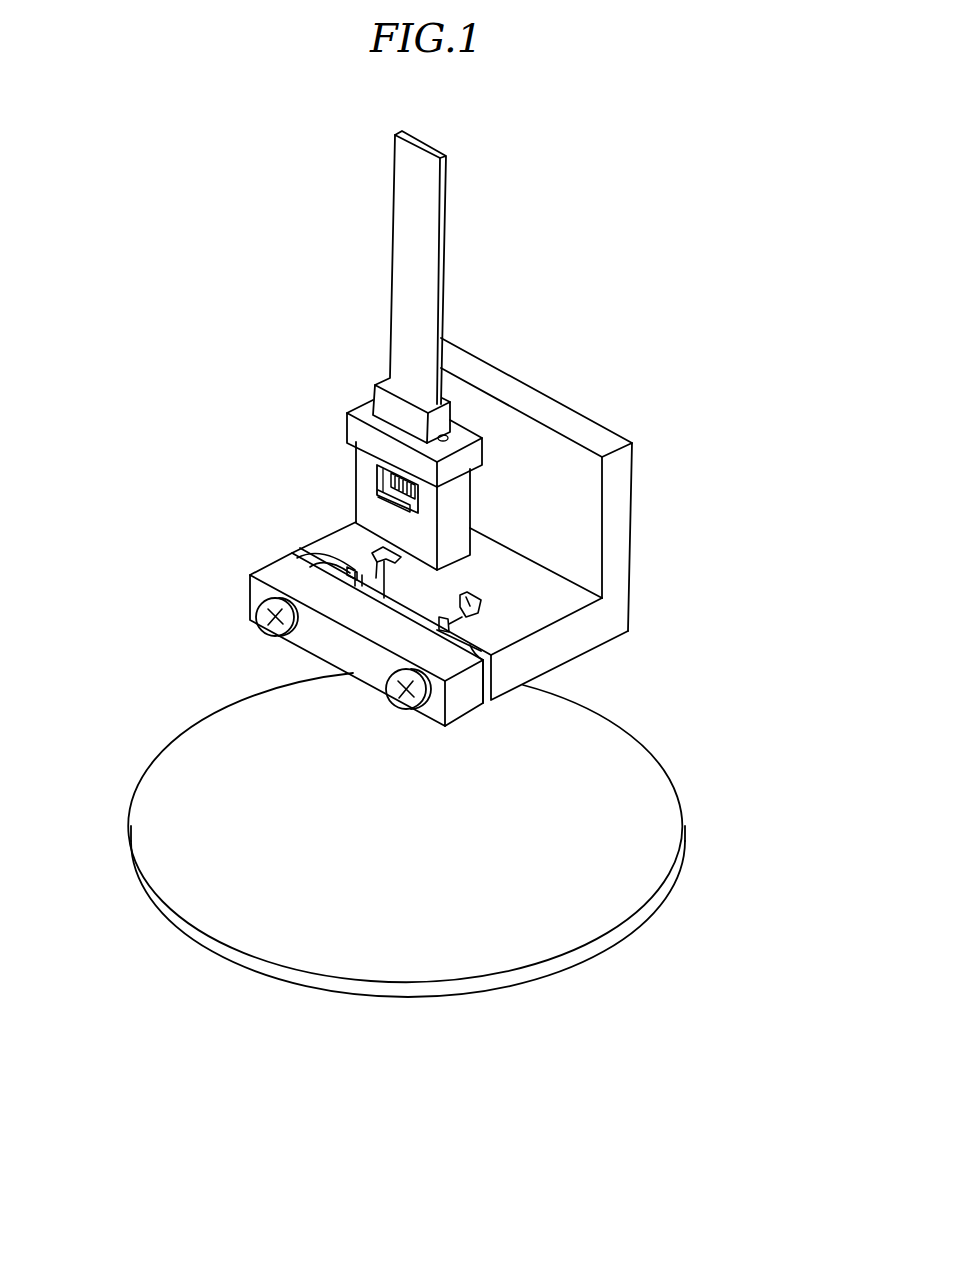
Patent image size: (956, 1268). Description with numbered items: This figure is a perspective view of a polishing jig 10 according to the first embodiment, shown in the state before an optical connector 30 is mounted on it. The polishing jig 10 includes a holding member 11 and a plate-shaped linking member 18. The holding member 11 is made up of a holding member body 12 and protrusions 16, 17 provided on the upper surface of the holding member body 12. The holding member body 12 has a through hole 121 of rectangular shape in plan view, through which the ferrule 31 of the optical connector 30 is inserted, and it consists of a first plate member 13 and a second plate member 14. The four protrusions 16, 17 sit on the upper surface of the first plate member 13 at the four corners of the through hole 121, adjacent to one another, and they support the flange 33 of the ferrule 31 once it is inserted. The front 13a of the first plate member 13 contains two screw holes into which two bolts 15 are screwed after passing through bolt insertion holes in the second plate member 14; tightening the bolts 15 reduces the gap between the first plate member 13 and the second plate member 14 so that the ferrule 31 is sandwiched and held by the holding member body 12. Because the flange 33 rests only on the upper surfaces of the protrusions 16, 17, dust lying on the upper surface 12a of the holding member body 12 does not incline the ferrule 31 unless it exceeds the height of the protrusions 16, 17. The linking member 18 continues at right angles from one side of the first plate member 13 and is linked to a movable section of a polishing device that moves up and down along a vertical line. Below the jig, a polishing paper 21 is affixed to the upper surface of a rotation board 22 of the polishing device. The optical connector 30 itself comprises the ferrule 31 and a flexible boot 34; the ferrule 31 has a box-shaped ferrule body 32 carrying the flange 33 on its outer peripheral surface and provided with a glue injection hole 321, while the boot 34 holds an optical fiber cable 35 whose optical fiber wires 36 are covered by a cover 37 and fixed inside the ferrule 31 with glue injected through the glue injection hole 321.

The polishing jig 10 is at (513, 555).
The holding member 11 is at (608, 503).
The holding member body 12 is at (513, 602).
The upper surface 12a is at (523, 593).
The first plate member 13 is at (544, 540).
The front 13a is at (473, 652).
The second plate member 14 is at (486, 692).
The bolts 15 is at (258, 610).
The protrusions 16 is at (345, 540).
The protrusions 17 is at (257, 571).
The linking member 18 is at (649, 524).
The polishing paper 21 is at (365, 883).
The rotation board 22 is at (479, 987).
The optical connector 30 is at (331, 350).
The ferrule 31 is at (325, 482).
The ferrule body 32 is at (299, 472).
The glue injection hole 321 is at (395, 498).
The flange 33 is at (353, 425).
The boot 34 is at (374, 392).
The optical fiber cable 35 is at (367, 267).
The optical fiber wires 36 is at (392, 488).
The cover 37 is at (357, 369).
The through hole 121 is at (409, 583).